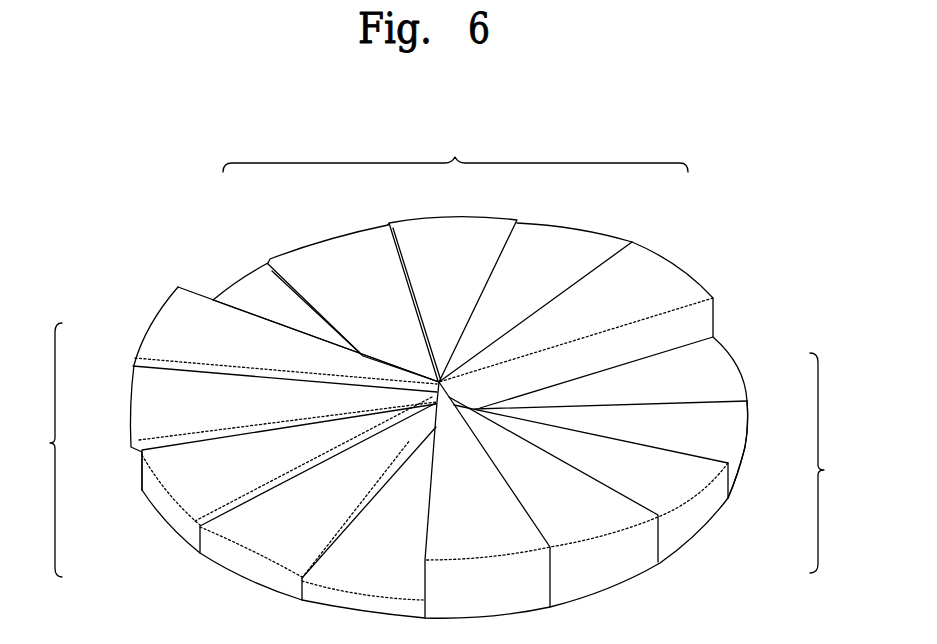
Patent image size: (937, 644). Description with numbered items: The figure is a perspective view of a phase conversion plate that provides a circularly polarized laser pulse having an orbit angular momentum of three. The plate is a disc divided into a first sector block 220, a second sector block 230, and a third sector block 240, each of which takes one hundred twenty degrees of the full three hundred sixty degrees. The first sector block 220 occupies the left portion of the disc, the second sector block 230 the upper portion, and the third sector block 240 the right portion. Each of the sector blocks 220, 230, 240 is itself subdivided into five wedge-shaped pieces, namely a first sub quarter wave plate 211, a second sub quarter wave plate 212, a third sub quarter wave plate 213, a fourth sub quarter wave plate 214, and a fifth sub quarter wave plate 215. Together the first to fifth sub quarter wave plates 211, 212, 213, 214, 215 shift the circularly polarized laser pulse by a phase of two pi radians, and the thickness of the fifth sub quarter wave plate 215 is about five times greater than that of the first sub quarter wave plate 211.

The first sub quarter wave plate 211 is at (243, 299).
The second sub quarter wave plate 212 is at (345, 257).
The third sub quarter wave plate 213 is at (457, 243).
The fourth sub quarter wave plate 214 is at (555, 243).
The fifth sub quarter wave plate 215 is at (668, 273).
The first sector block 220 is at (36, 450).
The second sector block 230 is at (455, 153).
The third sector block 240 is at (837, 463).